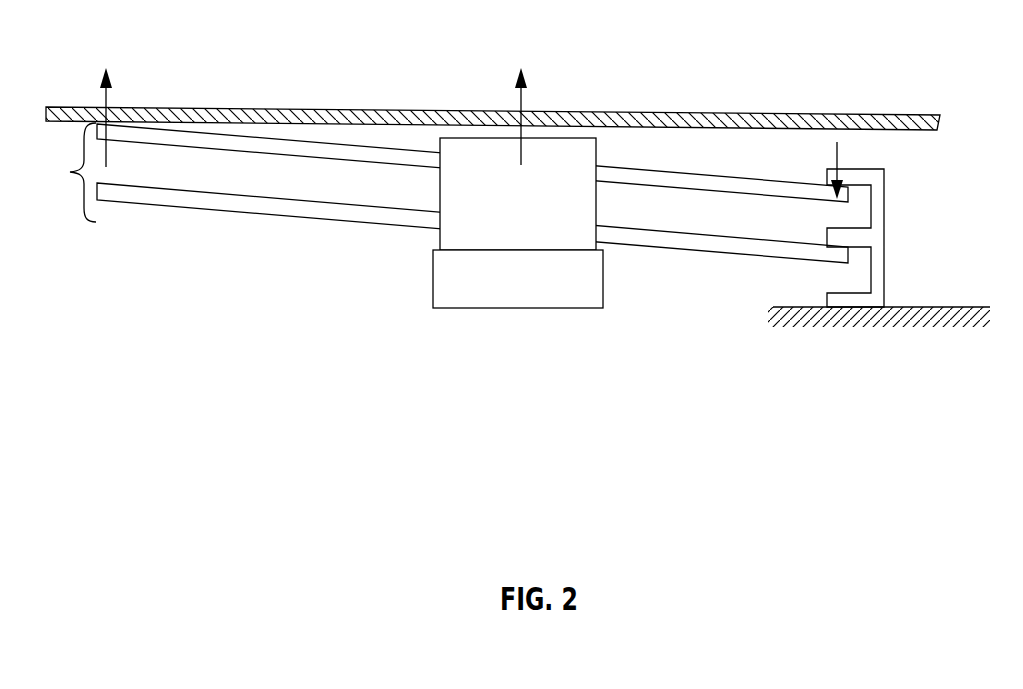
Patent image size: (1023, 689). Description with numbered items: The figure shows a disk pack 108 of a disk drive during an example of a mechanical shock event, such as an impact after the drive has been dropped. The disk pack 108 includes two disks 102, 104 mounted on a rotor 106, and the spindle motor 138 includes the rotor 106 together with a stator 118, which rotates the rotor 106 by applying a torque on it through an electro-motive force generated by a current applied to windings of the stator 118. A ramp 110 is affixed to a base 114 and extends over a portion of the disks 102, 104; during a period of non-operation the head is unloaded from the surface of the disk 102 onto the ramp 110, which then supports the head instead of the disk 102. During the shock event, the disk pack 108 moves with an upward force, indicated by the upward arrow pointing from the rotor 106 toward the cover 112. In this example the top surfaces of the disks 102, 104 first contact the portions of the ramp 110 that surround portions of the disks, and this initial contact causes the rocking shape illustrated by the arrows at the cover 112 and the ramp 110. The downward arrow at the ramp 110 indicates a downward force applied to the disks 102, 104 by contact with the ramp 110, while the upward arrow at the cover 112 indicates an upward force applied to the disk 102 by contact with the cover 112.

The disk 102 is at (392, 148).
The disk 104 is at (270, 197).
The rotor 106 is at (438, 235).
The disk pack 108 is at (64, 172).
The ramp 110 is at (884, 192).
The cover 112 is at (666, 110).
The base 114 is at (905, 307).
The stator 118 is at (433, 292).
The spindle motor 138 is at (634, 274).